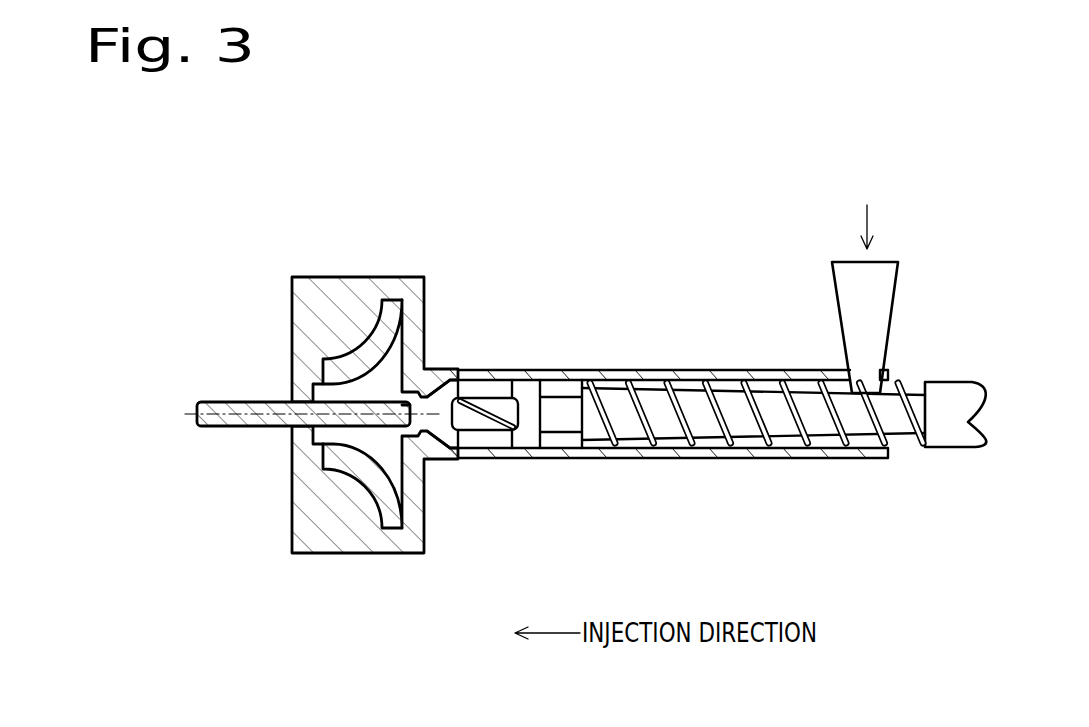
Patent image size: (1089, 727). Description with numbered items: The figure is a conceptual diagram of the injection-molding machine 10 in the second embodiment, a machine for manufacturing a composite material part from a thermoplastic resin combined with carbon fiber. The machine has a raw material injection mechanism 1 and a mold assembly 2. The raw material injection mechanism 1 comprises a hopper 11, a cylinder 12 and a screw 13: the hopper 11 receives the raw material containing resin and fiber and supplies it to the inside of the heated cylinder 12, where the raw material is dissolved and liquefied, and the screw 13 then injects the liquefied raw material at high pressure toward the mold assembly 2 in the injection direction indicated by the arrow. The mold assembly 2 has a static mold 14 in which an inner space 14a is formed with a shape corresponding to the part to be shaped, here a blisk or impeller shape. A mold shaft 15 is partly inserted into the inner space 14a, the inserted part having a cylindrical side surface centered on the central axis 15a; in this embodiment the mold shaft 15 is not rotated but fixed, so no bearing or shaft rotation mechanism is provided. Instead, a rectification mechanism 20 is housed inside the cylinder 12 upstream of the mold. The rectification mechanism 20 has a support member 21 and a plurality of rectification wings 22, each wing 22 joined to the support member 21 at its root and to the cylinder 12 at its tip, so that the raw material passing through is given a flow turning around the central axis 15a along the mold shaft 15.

The raw material injection mechanism 1 is at (664, 243).
The mold assembly 2 is at (393, 176).
The injection-molding machine 10 is at (958, 199).
The hopper 11 is at (888, 298).
The cylinder 12 is at (637, 373).
The screw 13 is at (672, 432).
The static mold 14 is at (355, 282).
The inner space 14a is at (393, 364).
The mold shaft 15 is at (235, 421).
The central axis 15a is at (260, 413).
The rectification mechanism 20 is at (525, 463).
The support member 21 is at (449, 437).
The rectification wings 22 is at (488, 383).